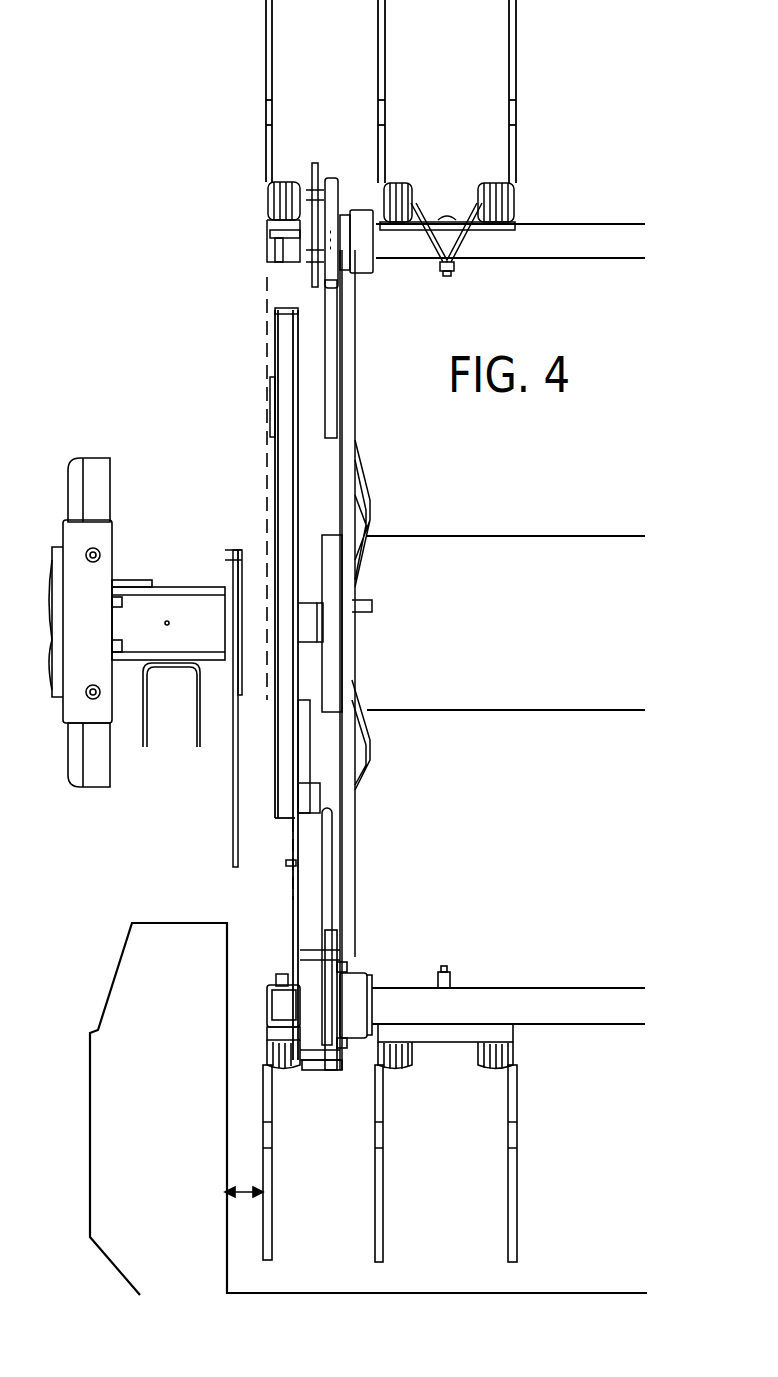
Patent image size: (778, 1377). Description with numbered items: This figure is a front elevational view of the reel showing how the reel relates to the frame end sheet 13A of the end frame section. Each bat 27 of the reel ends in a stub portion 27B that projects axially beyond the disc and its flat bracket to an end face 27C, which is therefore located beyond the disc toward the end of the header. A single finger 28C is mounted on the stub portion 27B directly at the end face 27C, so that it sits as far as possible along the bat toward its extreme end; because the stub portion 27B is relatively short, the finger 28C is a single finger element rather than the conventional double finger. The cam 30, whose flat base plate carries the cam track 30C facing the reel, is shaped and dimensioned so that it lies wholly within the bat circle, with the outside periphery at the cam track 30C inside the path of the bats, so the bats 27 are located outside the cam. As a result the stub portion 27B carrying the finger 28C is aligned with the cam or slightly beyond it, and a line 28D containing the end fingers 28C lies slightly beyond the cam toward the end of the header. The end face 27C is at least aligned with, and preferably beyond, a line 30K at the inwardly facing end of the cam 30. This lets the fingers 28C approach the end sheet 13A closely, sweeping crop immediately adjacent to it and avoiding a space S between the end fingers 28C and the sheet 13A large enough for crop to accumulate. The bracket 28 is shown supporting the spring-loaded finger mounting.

The end sheet 13A is at (225, 1082).
The bat 27 is at (588, 997).
The stub portion 27B is at (280, 987).
The end face 27C is at (267, 1000).
The spring bracket 28 is at (517, 1127).
The single finger 28C is at (273, 1142).
The line 28D is at (265, 407).
The cam 30 is at (283, 332).
The cam track 30C is at (287, 312).
The line 30K is at (293, 862).
The space S is at (232, 1188).